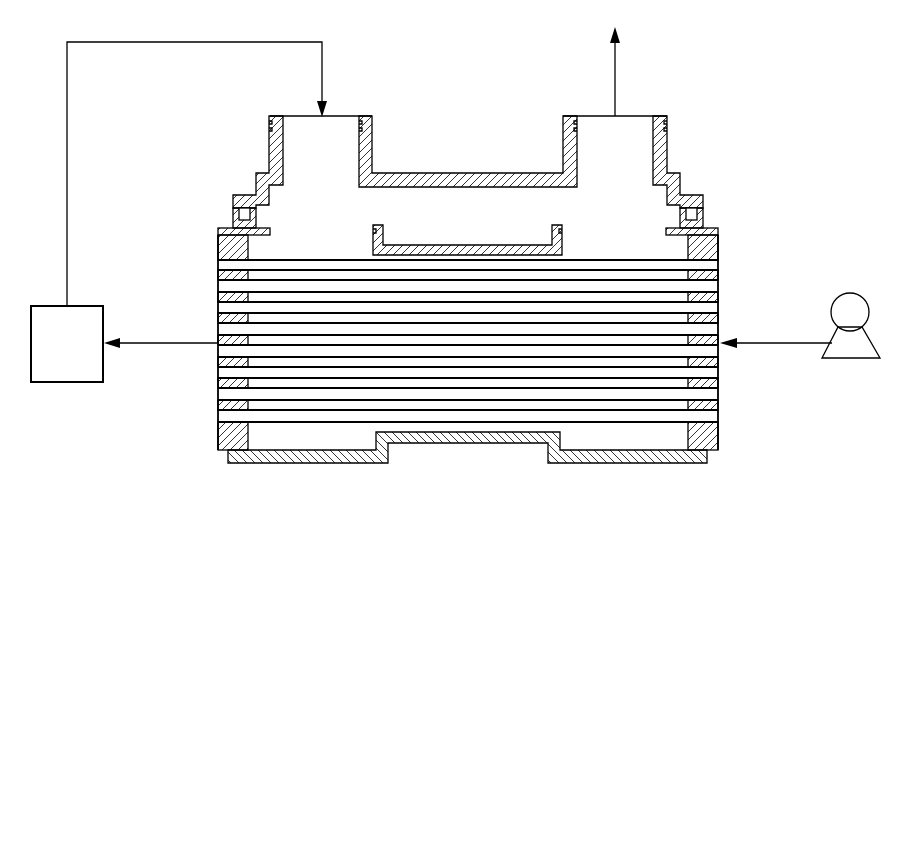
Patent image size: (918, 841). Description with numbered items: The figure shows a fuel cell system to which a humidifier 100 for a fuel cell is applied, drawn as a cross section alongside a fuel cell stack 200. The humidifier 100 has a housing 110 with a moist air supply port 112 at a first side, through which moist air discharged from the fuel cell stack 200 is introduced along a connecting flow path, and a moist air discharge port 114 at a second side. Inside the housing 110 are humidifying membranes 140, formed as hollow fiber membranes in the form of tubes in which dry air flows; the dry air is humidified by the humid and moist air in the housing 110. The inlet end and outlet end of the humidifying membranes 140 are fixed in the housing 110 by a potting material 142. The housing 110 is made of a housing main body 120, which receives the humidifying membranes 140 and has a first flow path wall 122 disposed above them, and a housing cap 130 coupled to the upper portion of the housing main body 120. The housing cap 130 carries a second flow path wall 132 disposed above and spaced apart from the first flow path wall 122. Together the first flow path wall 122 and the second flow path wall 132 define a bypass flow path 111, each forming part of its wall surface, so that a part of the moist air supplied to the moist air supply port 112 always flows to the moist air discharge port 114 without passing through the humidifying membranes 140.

The humidifier 100 is at (250, 145).
The housing 110 is at (805, 180).
The bypass flow path 111 is at (412, 207).
The moist air supply port 112 is at (348, 116).
The moist air discharge port 114 is at (642, 116).
The housing main body 120 is at (702, 228).
The first flow path wall 122 is at (448, 252).
The housing cap 130 is at (672, 180).
The second flow path wall 132 is at (517, 182).
The humidifying membranes 140 is at (280, 265).
The potting material 142 is at (705, 436).
The fuel cell stack 200 is at (67, 383).